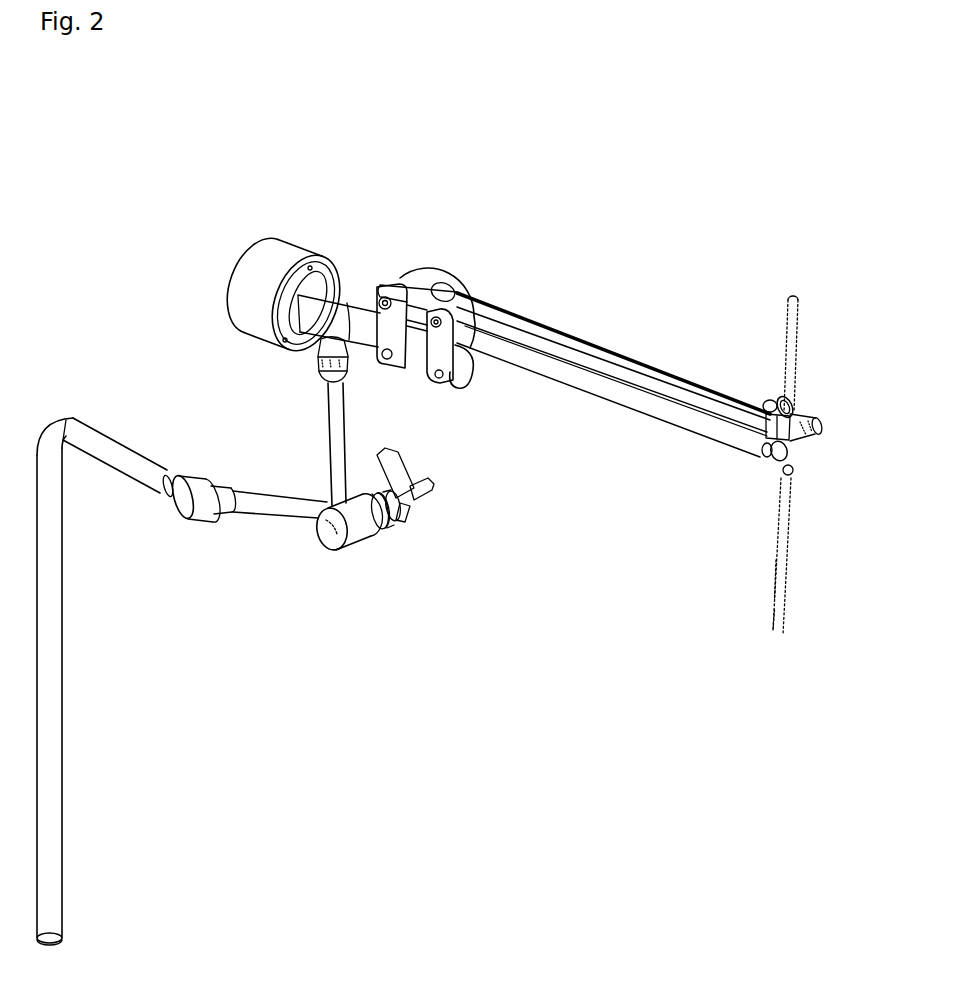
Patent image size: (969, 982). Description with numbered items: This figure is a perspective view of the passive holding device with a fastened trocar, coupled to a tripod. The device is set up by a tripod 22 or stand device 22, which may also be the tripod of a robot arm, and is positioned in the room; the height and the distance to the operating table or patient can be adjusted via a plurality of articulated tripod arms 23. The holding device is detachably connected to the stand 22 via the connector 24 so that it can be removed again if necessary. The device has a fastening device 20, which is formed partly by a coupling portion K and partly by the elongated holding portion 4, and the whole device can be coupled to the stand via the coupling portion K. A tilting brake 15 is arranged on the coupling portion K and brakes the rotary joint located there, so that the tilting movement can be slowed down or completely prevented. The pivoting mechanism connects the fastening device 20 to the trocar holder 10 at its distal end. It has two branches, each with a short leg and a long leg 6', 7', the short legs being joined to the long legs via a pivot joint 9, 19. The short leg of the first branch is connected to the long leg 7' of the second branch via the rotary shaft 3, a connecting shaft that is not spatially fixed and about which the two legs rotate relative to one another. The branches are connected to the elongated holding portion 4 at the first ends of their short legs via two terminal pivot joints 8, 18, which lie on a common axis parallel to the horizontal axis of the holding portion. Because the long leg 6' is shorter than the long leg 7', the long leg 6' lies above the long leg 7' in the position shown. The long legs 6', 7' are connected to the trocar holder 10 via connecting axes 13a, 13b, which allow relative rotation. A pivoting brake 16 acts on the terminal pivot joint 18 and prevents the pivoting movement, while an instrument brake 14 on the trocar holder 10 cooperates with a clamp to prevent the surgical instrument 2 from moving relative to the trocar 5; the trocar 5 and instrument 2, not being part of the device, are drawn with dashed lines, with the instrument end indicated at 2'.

The tilting brake 15 is at (257, 288).
The connector 24 is at (323, 344).
The coupling portion K is at (342, 303).
The pivot joint 19 is at (384, 295).
The pivoting brake 16 is at (424, 275).
The pivot joint 9 is at (442, 297).
The rotary shaft 3 is at (462, 305).
The long leg 6' is at (613, 325).
The long leg 7' is at (608, 409).
The connecting axis 13a is at (768, 403).
The instrument brake 14 is at (810, 418).
The connecting axis 13b is at (763, 458).
The trocar holder 10 is at (796, 483).
The trocar 5 is at (770, 548).
The surgical instrument 2 is at (733, 587).
The rod end 2' is at (731, 639).
The tripod 22 is at (72, 600).
The articulated tripod arms 23 is at (333, 437).
The elongated holding portion 4 is at (360, 343).
The terminal pivot joint 18 is at (388, 364).
The terminal pivot joint 8 is at (439, 380).
The fastening device 20 is at (463, 402).